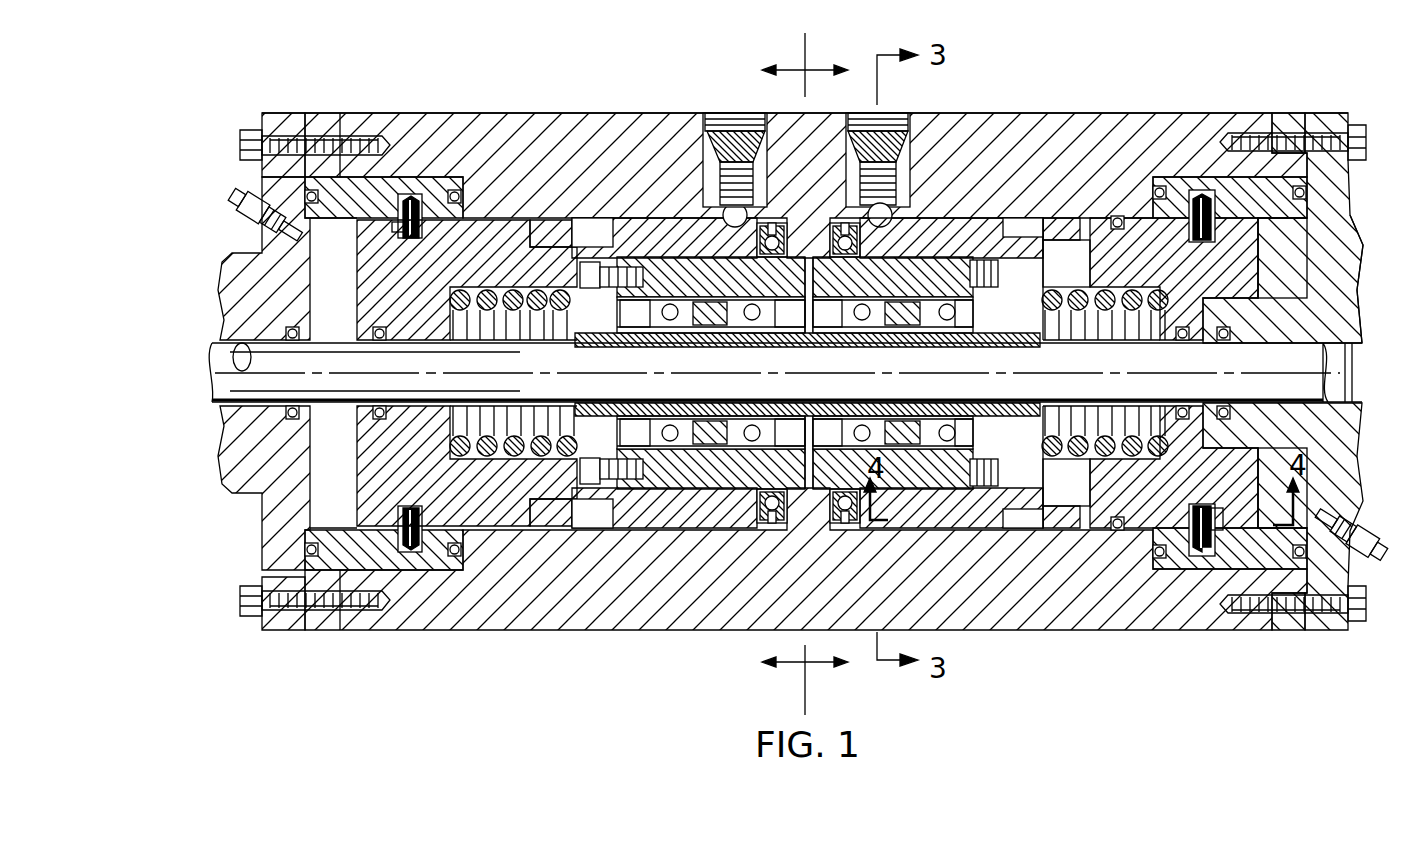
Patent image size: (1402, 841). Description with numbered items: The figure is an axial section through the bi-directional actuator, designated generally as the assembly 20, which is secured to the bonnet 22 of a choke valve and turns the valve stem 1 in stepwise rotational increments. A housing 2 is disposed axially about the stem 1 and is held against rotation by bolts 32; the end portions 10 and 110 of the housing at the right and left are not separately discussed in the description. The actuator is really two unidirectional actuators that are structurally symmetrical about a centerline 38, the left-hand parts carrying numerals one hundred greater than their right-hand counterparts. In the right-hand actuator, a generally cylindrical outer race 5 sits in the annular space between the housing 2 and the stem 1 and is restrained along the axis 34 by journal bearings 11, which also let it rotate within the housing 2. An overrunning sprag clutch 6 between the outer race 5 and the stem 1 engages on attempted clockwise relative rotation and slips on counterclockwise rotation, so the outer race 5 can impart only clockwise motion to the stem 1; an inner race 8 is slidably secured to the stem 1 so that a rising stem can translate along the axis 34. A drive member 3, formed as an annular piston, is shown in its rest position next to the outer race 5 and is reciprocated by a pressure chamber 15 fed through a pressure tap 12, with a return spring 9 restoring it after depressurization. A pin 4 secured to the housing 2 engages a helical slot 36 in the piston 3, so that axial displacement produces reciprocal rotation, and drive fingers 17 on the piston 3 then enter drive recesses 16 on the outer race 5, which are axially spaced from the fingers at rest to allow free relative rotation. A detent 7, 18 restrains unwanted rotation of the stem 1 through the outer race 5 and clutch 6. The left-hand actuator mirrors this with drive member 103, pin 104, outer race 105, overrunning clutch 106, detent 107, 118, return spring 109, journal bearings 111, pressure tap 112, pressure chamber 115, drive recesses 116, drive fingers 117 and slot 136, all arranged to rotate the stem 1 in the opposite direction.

The valve stem 1 is at (1049, 386).
The housing 2 is at (997, 166).
The drive member 3 is at (1129, 266).
The pin 4 is at (1203, 196).
The outer race 5 is at (962, 245).
The overrunning clutch 6 is at (889, 291).
The detent 7 is at (905, 128).
The inner race 8 is at (925, 318).
The return spring 9 is at (1066, 373).
The end cap 10 is at (1312, 266).
The journal bearings 11 is at (845, 238).
The pressure tap 12 is at (1383, 538).
The pressure chamber 15 is at (1267, 283).
The drive recesses 16 is at (1015, 223).
The drive fingers 17 is at (1066, 226).
The detent 18 is at (893, 222).
The assembly 20 is at (978, 110).
The bonnet 22 is at (1358, 254).
The bolts 32 is at (1372, 132).
The axis 34 is at (490, 372).
The slot 36 is at (1228, 513).
The centerline 38 is at (805, 62).
The drive member 103 is at (414, 278).
The pin 104 is at (412, 194).
The outer race 105 is at (623, 245).
The overrunning clutch 106 is at (664, 291).
The detent 107 is at (718, 140).
The return spring 109 is at (530, 316).
The end wall 110 is at (228, 460).
The journal bearings 111 is at (772, 238).
The pressure tap 112 is at (256, 220).
The pressure chamber 115 is at (310, 296).
The drive recesses 116 is at (590, 226).
The drive fingers 117 is at (546, 226).
The detent 118 is at (723, 224).
The slot 136 is at (393, 228).